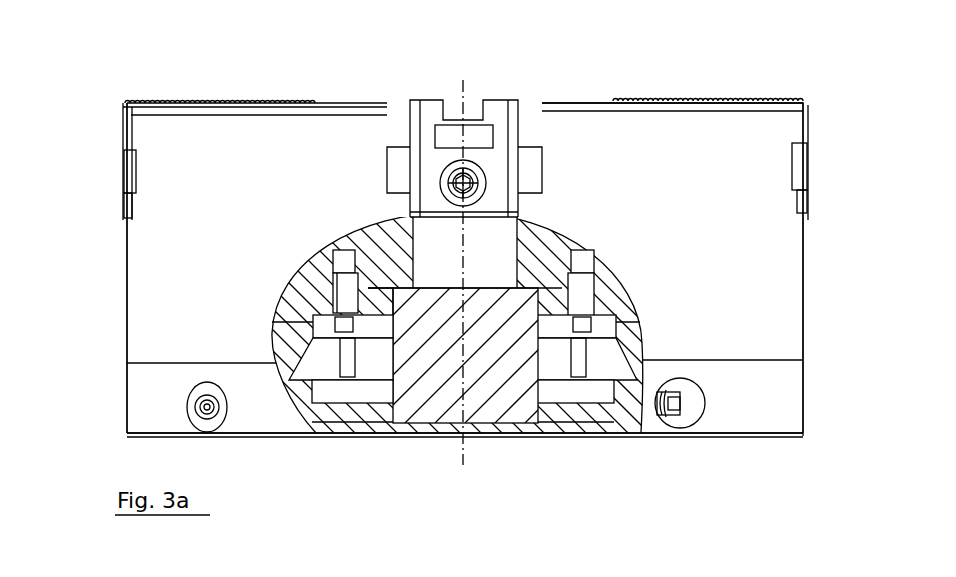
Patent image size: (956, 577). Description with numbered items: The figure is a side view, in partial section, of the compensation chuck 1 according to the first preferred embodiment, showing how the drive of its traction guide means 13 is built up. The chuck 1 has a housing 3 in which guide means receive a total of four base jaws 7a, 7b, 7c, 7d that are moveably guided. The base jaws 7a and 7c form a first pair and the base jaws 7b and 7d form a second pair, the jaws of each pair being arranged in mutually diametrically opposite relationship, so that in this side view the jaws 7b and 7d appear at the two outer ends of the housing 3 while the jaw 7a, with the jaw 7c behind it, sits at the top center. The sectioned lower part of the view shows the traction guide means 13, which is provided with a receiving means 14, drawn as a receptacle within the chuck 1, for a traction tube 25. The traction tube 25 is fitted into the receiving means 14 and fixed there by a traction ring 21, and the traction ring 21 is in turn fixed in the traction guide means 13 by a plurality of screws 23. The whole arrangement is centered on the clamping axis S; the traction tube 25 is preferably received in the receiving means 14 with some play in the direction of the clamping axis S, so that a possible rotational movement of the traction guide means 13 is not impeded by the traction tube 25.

The compensation chuck 1 is at (155, 46).
The housing 3 is at (680, 140).
The base jaw 7a is at (425, 117).
The base jaw 7b is at (126, 106).
The base jaw 7c is at (464, 116).
The base jaw 7d is at (800, 104).
The traction guide means 13 is at (297, 298).
The receiving means 14 is at (392, 275).
The traction ring 21 is at (379, 328).
The screws 23 is at (333, 272).
The traction tube 25 is at (440, 400).
The clamping axis S is at (466, 135).